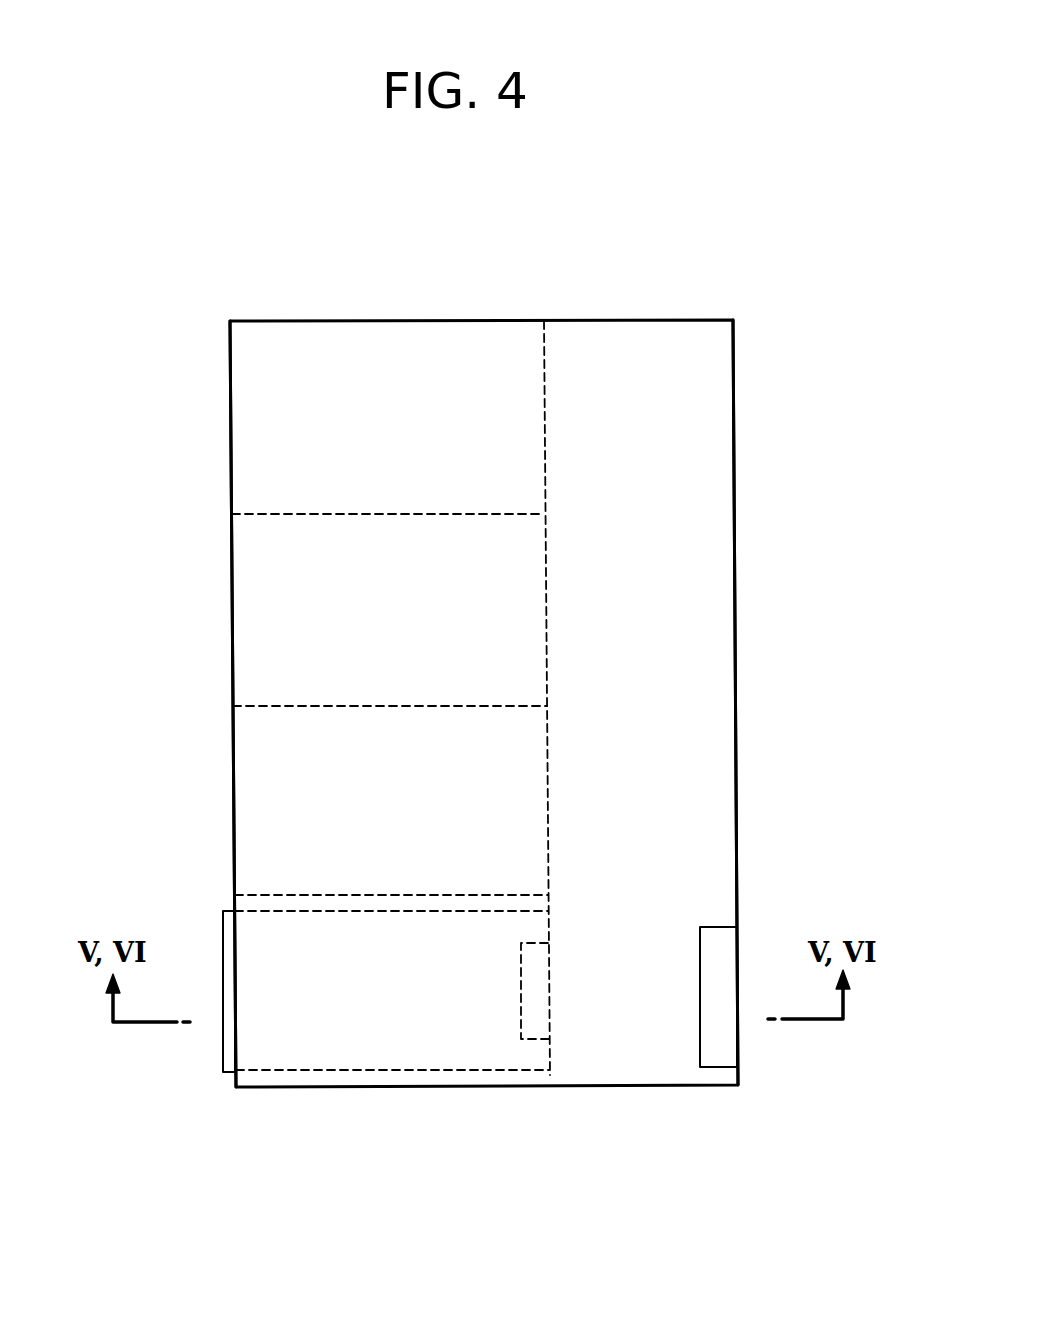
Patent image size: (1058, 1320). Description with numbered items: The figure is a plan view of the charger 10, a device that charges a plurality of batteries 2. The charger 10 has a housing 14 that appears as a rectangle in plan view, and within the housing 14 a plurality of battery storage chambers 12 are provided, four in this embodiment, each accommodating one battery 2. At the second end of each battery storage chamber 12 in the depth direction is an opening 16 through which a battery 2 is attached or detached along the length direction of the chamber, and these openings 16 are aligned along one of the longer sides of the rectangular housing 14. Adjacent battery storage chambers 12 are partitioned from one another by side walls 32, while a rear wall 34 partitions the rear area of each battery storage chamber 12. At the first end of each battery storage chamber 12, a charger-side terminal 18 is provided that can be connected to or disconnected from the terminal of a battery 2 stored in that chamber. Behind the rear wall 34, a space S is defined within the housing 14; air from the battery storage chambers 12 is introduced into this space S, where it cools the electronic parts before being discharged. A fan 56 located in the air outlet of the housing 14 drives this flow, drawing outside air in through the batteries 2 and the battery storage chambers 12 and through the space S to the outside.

The charger 10 is at (682, 124).
The housing 14 is at (722, 318).
The rear wall 34 is at (544, 373).
The side walls 32 is at (413, 510).
The space S is at (685, 560).
The opening 16 is at (228, 382).
The battery storage chamber 12 is at (273, 404).
The battery 2 is at (221, 1067).
The fan 56 is at (720, 937).
The charger-side terminal 18 is at (540, 1005).